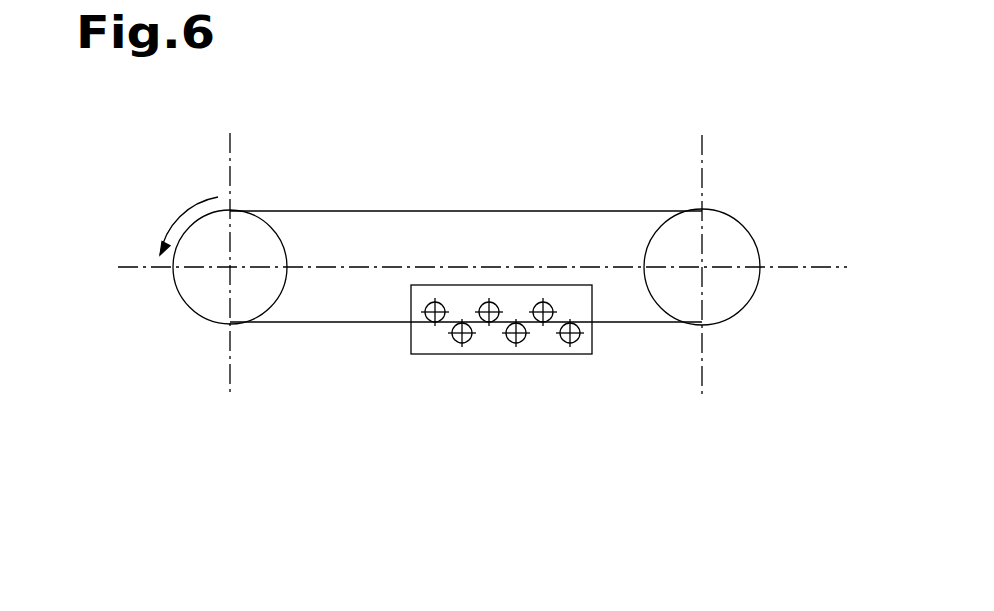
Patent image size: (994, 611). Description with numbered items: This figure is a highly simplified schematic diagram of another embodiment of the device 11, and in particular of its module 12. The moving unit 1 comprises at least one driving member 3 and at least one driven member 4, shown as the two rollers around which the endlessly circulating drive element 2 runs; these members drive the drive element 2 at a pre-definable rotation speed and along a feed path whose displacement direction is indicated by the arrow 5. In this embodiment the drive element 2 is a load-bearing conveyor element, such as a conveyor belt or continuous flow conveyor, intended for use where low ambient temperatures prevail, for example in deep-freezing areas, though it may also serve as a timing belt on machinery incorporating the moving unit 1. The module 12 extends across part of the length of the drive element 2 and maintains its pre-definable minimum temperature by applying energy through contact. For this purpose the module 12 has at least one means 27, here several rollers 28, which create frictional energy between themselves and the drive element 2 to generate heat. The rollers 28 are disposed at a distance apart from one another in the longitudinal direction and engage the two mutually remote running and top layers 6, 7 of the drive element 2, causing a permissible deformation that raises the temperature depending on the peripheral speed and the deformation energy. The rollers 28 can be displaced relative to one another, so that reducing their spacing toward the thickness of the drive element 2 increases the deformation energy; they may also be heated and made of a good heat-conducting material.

The moving unit 1 is at (572, 162).
The drive element 2 is at (394, 190).
The driving member 3 is at (217, 280).
The driven member 4 is at (727, 227).
The arrow 5 is at (176, 226).
The running layer 6 is at (314, 316).
The top layer 7 is at (350, 322).
The device 11 is at (434, 395).
The module 12 is at (540, 345).
The means 27 is at (425, 338).
The rollers 28 is at (488, 302).